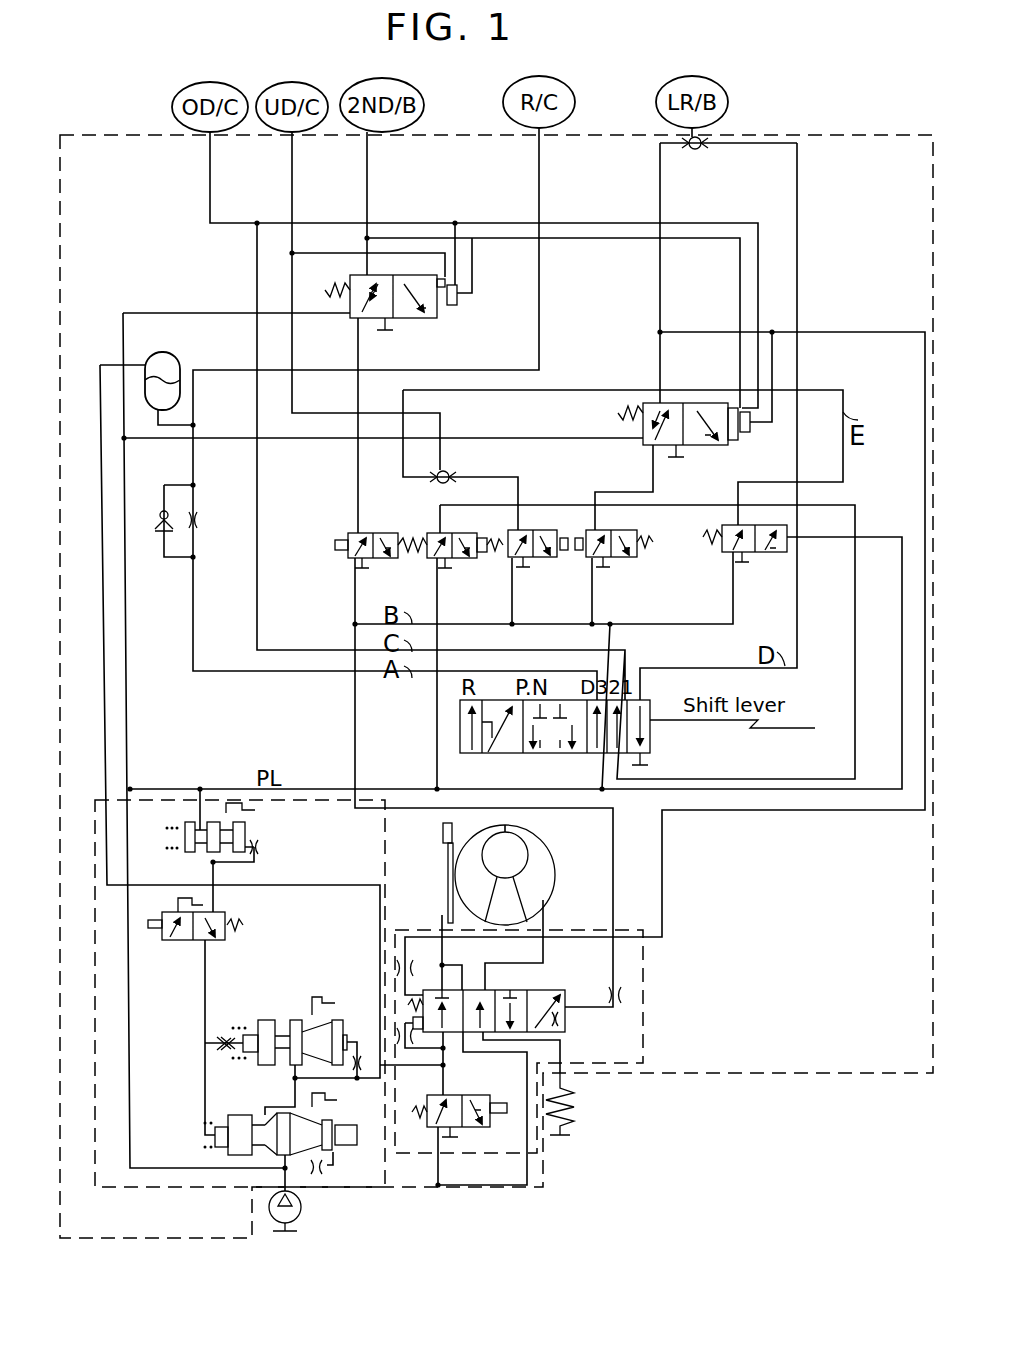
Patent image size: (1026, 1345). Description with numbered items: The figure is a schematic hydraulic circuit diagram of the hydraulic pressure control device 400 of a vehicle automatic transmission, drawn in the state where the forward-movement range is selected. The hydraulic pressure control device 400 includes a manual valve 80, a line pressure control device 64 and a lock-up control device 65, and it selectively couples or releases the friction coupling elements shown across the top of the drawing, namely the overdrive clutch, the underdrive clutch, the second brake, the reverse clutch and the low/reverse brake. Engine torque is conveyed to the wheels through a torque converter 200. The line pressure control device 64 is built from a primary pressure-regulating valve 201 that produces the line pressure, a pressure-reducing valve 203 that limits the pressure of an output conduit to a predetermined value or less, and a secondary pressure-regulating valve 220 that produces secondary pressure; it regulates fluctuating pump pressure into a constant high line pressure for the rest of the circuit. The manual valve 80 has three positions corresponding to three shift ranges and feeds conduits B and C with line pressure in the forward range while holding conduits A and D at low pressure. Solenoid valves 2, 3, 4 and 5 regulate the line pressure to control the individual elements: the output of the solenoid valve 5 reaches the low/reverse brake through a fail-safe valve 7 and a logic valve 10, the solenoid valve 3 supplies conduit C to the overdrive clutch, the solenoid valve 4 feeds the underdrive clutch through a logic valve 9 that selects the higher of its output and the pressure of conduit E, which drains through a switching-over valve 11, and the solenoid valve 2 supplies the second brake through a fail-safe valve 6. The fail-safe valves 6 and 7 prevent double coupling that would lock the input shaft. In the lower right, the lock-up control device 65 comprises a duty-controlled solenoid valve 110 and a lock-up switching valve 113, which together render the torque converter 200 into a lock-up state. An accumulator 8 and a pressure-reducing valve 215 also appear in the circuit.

The solenoid valve 2 is at (350, 533).
The solenoid valve 3 is at (471, 528).
The solenoid valve 4 is at (564, 514).
The solenoid valve 5 is at (645, 527).
The fail-safe valve 6 is at (448, 310).
The fail-safe valve 7 is at (748, 437).
The accumulator 8 is at (178, 358).
The logic valve 9 is at (452, 473).
The logic valve 10 is at (705, 140).
The switching-over valve 11 is at (790, 531).
The line pressure control device 64 is at (150, 1188).
The lock-up control device 65 is at (643, 1026).
The manual valve 80 is at (652, 748).
The solenoid valve 110 is at (466, 1094).
The lock-up switching valve 113 is at (568, 1025).
The torque converter 200 is at (556, 858).
The primary pressure-regulating valve 201 is at (295, 1139).
The pressure-reducing valve 203 is at (260, 841).
The pressure reducing valve 215 is at (228, 910).
The secondary pressure-regulating valve 220 is at (340, 1018).
The hydraulic pressure control device 400 is at (787, 1073).